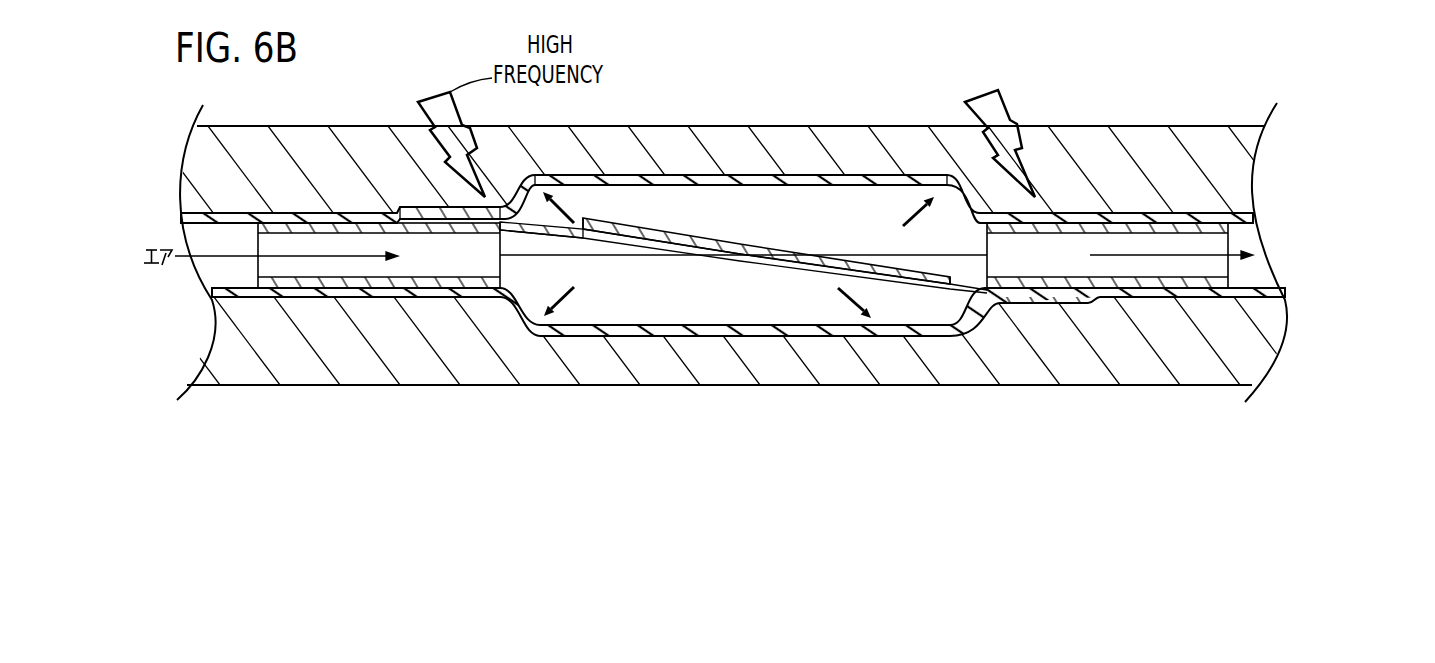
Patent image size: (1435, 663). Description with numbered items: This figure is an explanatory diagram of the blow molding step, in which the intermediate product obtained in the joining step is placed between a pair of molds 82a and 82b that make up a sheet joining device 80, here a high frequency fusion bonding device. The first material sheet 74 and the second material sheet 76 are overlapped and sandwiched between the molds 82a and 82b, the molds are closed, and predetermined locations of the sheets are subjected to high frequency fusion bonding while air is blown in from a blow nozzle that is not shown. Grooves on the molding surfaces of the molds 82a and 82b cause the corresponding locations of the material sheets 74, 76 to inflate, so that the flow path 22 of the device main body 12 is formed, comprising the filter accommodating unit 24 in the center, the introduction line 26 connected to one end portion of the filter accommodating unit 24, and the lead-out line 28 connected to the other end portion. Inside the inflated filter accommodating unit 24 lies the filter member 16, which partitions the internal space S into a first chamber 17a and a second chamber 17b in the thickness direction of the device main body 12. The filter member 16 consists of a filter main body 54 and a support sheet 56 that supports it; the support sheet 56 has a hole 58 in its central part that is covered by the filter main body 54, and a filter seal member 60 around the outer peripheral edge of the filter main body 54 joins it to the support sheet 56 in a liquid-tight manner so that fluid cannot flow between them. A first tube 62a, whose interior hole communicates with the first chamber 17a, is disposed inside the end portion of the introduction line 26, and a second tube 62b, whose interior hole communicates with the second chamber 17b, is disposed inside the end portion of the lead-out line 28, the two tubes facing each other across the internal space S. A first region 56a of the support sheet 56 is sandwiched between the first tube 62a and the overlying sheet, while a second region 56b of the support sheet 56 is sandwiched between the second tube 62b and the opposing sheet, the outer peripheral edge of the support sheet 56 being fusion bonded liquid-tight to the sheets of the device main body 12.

The device main body 12 is at (718, 255).
The filter member 16 is at (813, 243).
The first chamber 17a is at (748, 362).
The second chamber 17b is at (880, 185).
The flow path 22 is at (686, 135).
The filter accommodating unit 24 is at (680, 178).
The introduction line 26 is at (203, 208).
The lead-out line 28 is at (1205, 207).
The filter main body 54 is at (733, 247).
The support sheet 56 is at (948, 288).
The first region 56a is at (440, 207).
The second region 56b is at (1039, 299).
The hole 58 is at (783, 263).
The filter seal member 60 is at (595, 223).
The first tube 62a is at (321, 280).
The second tube 62b is at (1122, 285).
The first material sheet 74 is at (1085, 213).
The second material sheet 76 is at (1175, 303).
The sheet joining device 80 is at (1362, 160).
The mold 82a is at (1273, 182).
The mold 82b is at (1298, 334).
The internal space S is at (803, 190).